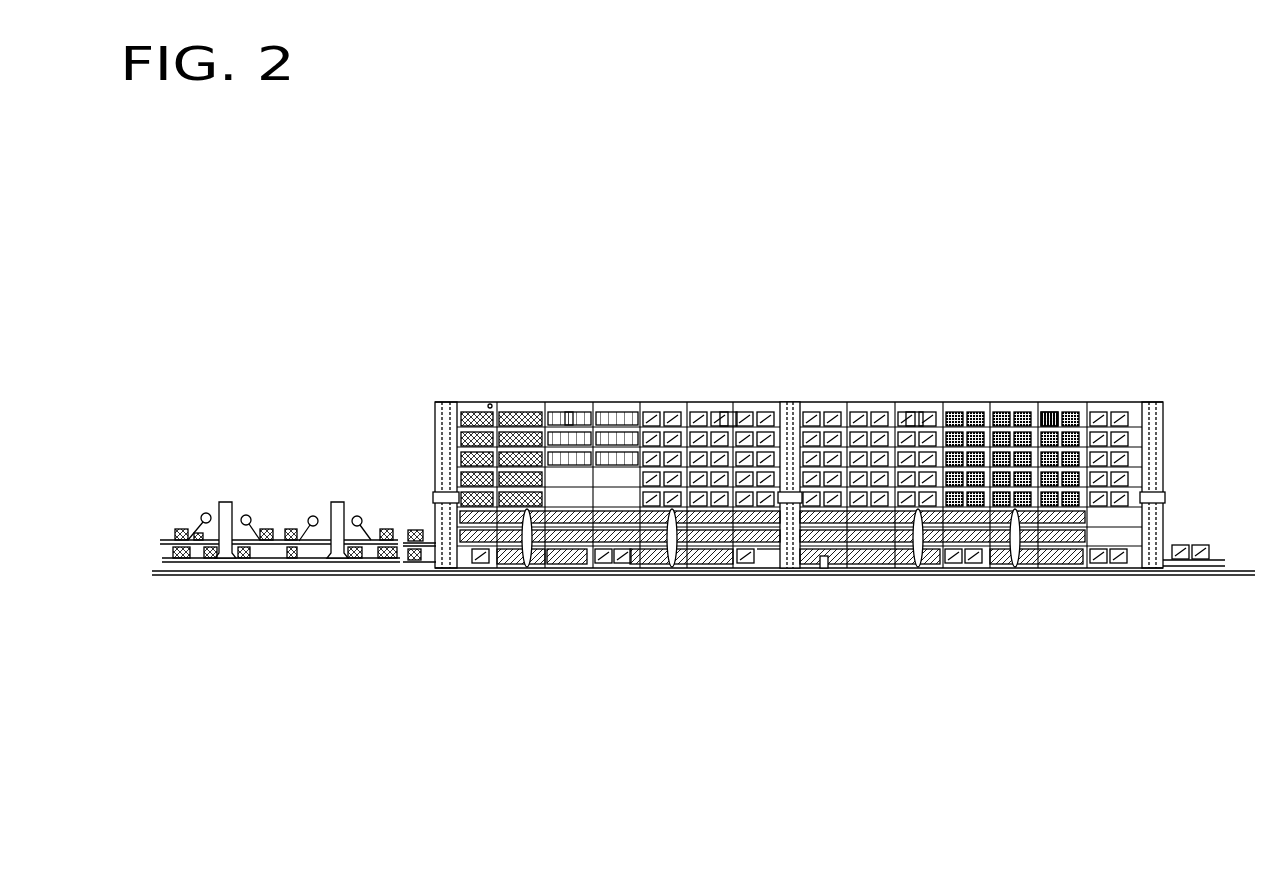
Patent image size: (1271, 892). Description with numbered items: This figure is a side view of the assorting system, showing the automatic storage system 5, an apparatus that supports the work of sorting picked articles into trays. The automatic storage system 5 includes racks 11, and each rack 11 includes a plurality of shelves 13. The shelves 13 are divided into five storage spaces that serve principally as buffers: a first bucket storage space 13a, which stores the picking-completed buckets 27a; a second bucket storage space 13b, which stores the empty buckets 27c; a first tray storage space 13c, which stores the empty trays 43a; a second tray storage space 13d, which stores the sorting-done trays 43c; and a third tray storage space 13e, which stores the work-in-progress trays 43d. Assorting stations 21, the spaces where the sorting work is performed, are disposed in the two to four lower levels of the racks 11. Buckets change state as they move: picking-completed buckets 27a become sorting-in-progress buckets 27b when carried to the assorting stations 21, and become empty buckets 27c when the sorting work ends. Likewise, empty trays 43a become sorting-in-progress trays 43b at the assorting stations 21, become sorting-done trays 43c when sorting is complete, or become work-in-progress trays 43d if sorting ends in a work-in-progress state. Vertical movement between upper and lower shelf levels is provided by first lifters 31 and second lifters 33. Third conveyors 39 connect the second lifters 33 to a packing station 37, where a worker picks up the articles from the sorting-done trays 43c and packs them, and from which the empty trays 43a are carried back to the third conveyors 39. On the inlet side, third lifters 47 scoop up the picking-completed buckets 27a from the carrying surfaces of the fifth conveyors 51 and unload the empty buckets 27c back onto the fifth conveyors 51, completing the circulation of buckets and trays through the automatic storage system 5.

The automatic storage system 5 is at (779, 348).
The rack 11 is at (645, 402).
The shelf 13 is at (1090, 400).
The first bucket storage space 13a is at (866, 402).
The second bucket storage space 13b is at (996, 402).
The first tray storage space 13c is at (765, 572).
The second tray storage space 13d is at (508, 402).
The third tray storage space 13e is at (598, 402).
The assorting station 21 is at (1042, 572).
The picking-completed bucket 27a is at (1181, 545).
The sorting-in-progress bucket 27b is at (1097, 572).
The empty bucket 27c is at (1008, 403).
The first lifter 31 is at (795, 402).
The second lifter 33 is at (433, 422).
The packing station 37 is at (272, 480).
The third conveyor 39 is at (407, 530).
The empty tray 43a is at (818, 572).
The sorting-in-progress tray 43b is at (713, 572).
The sorting-done tray 43c is at (296, 522).
The work-in-progress tray 43d is at (567, 403).
The third lifter 47 is at (1168, 416).
The fifth conveyor 51 is at (1218, 556).